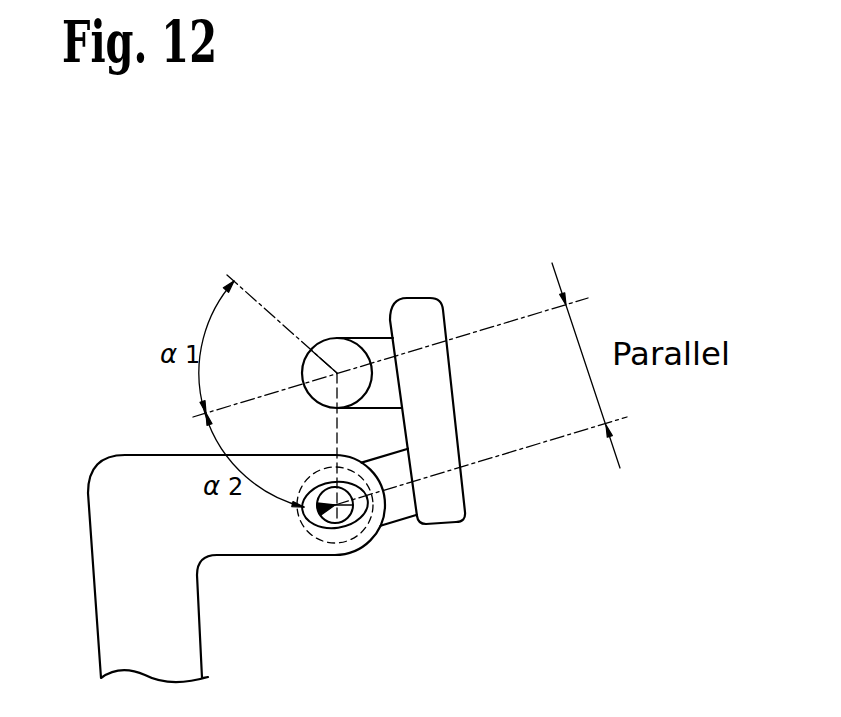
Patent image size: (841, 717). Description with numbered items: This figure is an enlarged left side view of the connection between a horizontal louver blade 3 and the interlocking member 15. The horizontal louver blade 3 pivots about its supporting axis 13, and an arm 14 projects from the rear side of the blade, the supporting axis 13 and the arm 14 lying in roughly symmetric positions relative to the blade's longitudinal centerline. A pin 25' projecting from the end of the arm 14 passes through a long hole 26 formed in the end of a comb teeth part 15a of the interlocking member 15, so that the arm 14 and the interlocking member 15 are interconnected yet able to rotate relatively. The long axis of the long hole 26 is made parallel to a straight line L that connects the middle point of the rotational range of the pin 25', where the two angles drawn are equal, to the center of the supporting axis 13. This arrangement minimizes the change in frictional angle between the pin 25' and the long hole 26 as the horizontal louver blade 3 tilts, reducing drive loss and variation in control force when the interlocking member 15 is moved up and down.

The horizontal louver blade 3 is at (441, 305).
The supporting axis 13 is at (330, 347).
The arm 14 is at (398, 520).
The interlocking member 15 is at (98, 647).
The comb teeth part 15a is at (337, 551).
The lower pivot pin 25' is at (365, 537).
The long hole 26 is at (298, 520).
The straight line L is at (501, 320).